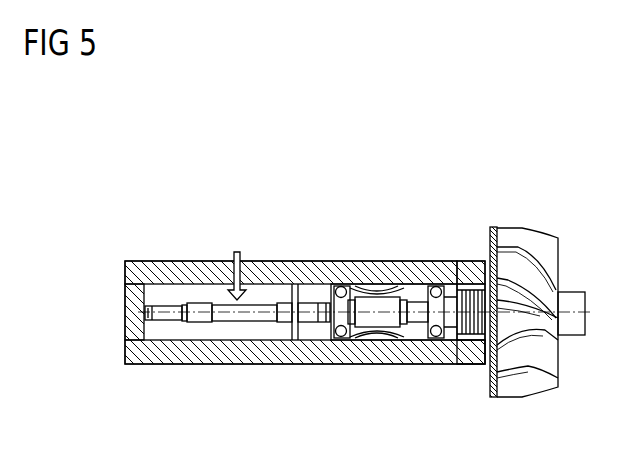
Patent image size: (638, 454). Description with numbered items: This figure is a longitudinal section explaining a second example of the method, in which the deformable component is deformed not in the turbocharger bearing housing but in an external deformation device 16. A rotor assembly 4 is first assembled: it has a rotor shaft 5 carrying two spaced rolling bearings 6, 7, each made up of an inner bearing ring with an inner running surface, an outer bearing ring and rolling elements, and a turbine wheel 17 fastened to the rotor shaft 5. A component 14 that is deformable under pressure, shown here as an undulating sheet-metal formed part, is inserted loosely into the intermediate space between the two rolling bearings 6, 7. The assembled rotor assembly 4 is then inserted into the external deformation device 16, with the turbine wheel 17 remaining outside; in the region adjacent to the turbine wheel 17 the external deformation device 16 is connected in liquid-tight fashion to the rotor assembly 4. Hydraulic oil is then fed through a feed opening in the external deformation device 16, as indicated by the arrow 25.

The rotor assembly 4 is at (537, 266).
The rotor shaft 5 is at (260, 313).
The rolling bearing 6 is at (437, 258).
The rolling bearing 7 is at (348, 258).
The component 14 is at (393, 284).
The external deformation device 16 is at (208, 355).
The turbine wheel 17 is at (533, 245).
The arrow 25 is at (237, 251).